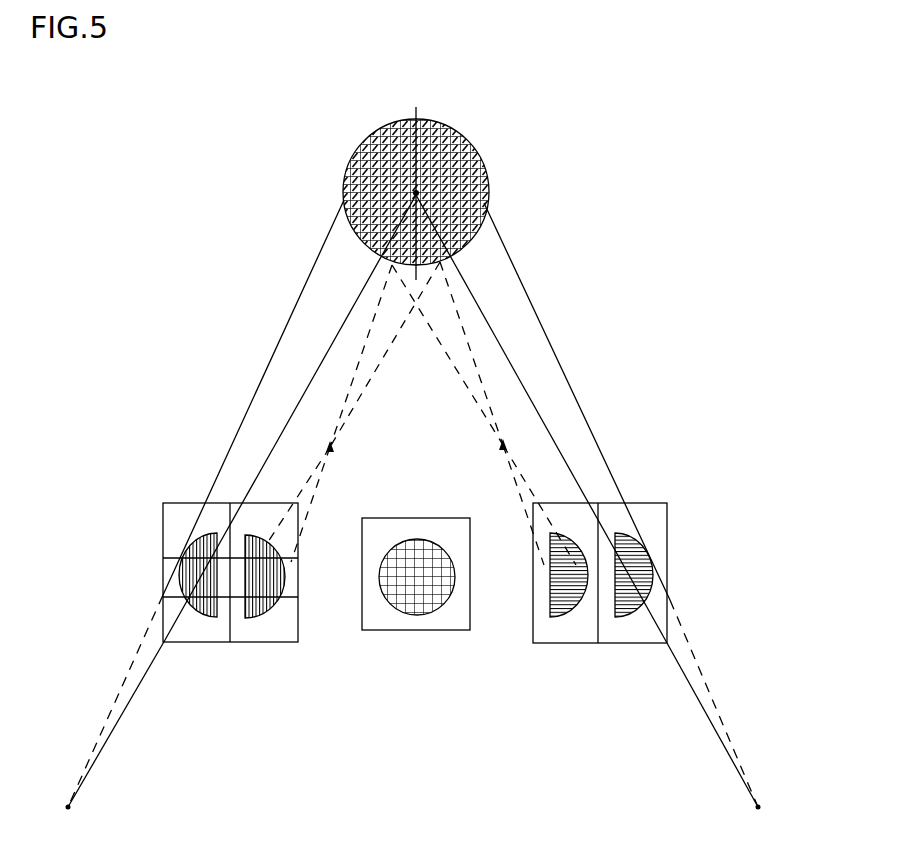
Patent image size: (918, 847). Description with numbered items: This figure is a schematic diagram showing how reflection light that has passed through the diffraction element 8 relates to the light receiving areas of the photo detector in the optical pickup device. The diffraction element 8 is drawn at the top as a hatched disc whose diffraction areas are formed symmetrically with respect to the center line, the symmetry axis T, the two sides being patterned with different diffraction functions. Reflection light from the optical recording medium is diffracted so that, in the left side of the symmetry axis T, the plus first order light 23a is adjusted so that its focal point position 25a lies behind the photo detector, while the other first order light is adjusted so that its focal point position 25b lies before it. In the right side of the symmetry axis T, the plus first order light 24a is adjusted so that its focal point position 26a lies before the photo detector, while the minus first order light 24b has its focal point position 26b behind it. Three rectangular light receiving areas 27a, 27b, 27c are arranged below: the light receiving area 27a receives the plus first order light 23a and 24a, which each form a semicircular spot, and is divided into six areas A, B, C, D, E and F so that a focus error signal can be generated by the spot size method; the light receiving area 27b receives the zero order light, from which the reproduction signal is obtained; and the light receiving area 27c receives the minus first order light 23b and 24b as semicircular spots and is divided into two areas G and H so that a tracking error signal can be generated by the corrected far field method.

The diffraction element 8 is at (395, 113).
The symmetry axis T is at (418, 108).
The +1st order light 23a is at (350, 322).
The −1st order light 23b is at (459, 373).
The +1st order light 24a is at (368, 382).
The −1st order light 24b is at (488, 330).
The focal point position 25a is at (90, 822).
The focal point position 25b is at (503, 449).
The focal point position 26a is at (330, 450).
The focal point position 26b is at (794, 813).
The light receiving area 27a is at (240, 643).
The light receiving area 27b is at (405, 630).
The light receiving area 27c is at (570, 643).